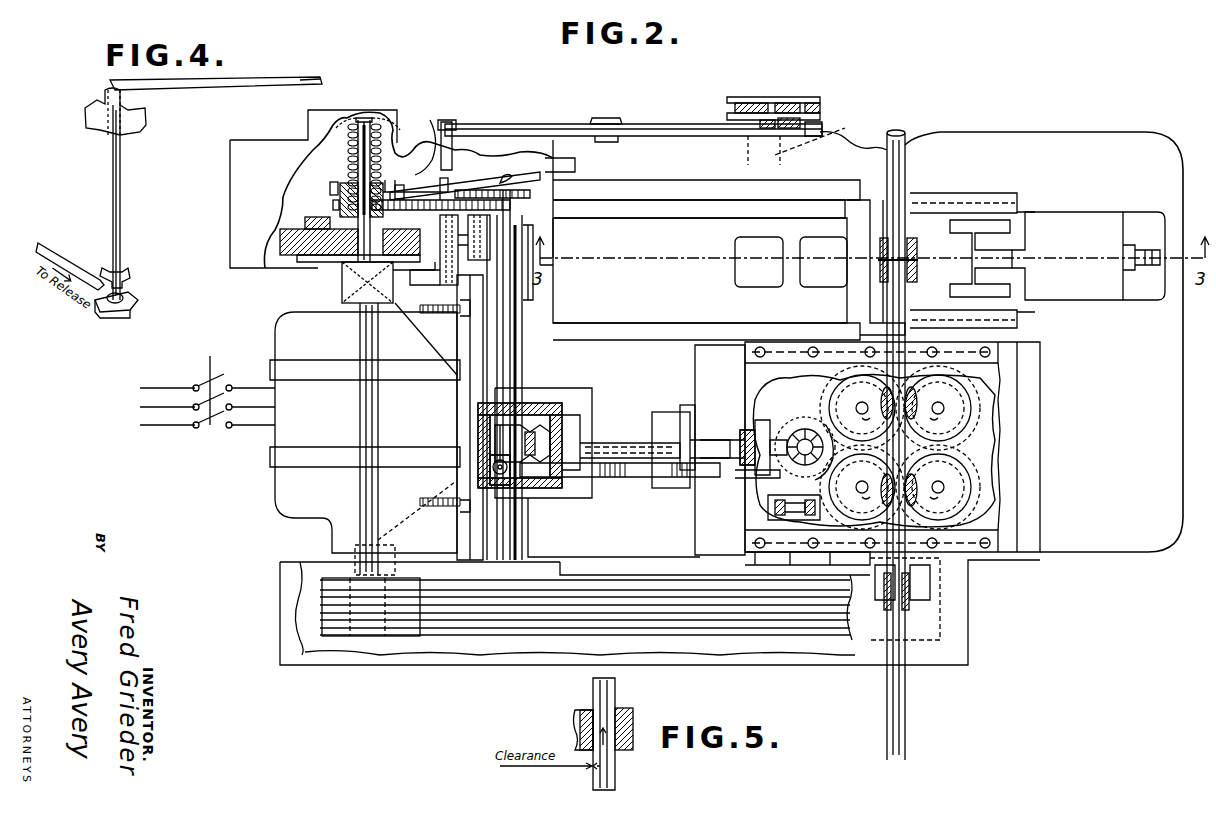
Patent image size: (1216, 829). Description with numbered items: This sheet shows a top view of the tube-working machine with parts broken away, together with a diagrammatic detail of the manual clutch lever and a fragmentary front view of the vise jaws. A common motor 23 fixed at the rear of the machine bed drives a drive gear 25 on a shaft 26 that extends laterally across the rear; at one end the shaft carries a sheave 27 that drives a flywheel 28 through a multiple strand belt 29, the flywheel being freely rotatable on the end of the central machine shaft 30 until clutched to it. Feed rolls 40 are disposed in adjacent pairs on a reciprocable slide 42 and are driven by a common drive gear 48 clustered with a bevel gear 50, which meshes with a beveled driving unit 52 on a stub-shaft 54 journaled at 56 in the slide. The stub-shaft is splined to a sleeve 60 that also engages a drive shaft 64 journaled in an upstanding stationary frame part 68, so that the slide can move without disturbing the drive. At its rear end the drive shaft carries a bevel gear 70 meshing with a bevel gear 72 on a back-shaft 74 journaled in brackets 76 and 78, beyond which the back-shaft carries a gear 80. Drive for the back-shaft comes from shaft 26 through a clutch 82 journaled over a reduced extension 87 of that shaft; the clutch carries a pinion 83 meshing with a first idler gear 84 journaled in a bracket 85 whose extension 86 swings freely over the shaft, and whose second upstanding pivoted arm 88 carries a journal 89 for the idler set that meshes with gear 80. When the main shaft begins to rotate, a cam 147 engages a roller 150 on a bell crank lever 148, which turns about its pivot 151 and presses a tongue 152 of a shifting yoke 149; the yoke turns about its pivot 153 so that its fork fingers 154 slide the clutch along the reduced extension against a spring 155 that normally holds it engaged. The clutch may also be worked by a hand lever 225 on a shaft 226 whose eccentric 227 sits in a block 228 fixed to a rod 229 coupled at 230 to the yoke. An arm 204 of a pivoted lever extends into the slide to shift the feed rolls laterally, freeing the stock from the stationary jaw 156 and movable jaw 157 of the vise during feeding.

In FIG. 2, the motor 23 is at (268, 502).
In FIG. 2, the drive gear 25 is at (290, 272).
In FIG. 2, the shaft 26 is at (360, 412).
In FIG. 2, the sheave 27 is at (372, 636).
In FIG. 2, the flywheel 28 is at (622, 640).
In FIG. 2, the multiple strand belt 29 is at (512, 636).
In FIG. 2, the central machine shaft 30 is at (979, 338).
In FIG. 2, the feed rolls 40 is at (955, 412).
In FIG. 2, the reciprocable slide 42 is at (1000, 520).
In FIG. 2, the common drive gear 48 is at (805, 480).
In FIG. 2, the bevel gear 50 is at (808, 422).
In FIG. 2, the beveled driving unit 52 is at (770, 430).
In FIG. 2, the stub-shaft 54 is at (745, 478).
In FIG. 2, the journal 56 is at (740, 428).
In FIG. 2, the sleeve 60 is at (700, 440).
In FIG. 2, the drive shaft 64 is at (628, 440).
In FIG. 2, the stationary frame part 68 is at (668, 395).
In FIG. 2, the bevel gear 70 is at (560, 400).
In FIG. 2, the bevel gear 72 is at (480, 430).
In FIG. 2, the back-shaft 74 is at (470, 378).
In FIG. 2, the bracket 76 is at (560, 378).
In FIG. 2, the bracket 78 is at (553, 225).
In FIG. 2, the gear 80 is at (553, 192).
In FIG. 2, the clutch 82 is at (325, 222).
In FIG. 2, the pinion 83 is at (330, 198).
In FIG. 2, the first idler gear 84 is at (410, 185).
In FIG. 2, the bracket 85 is at (470, 268).
In FIG. 2, the extension 86 is at (413, 283).
In FIG. 2, the reduced extension 87 is at (352, 155).
In FIG. 2, the second upstanding pivoted arm 88 is at (485, 252).
In FIG. 2, the journal 89 is at (553, 210).
In FIG. 2, the cam 147 is at (820, 122).
In FIG. 2, the bell crank lever 148 is at (553, 110).
In FIG. 2, the shifting yoke 149 is at (440, 112).
In FIG. 2, the roller 150 is at (778, 80).
In FIG. 2, the pivot 151 is at (612, 115).
In FIG. 2, the tongue 152 is at (452, 122).
In FIG. 2, the pivot 153 is at (462, 170).
In FIG. 2, the fork fingers 154 is at (380, 112).
In FIG. 2, the spring 155 is at (356, 114).
In FIG. 5, the stationary jaw 156 is at (585, 708).
In FIG. 5, the movable jaw 157 is at (633, 712).
In FIG. 2, the arm 204 is at (740, 540).
In FIG. 4, the hand lever 225 is at (212, 86).
In FIG. 2, the hand lever 225 is at (622, 478).
In FIG. 4, the shaft 226 is at (122, 195).
In FIG. 4, the eccentric 227 is at (108, 310).
In FIG. 4, the block 228 is at (128, 305).
In FIG. 2, the block 228 is at (495, 490).
In FIG. 4, the rod 229 is at (62, 252).
In FIG. 2, the rod 229 is at (515, 345).
In FIG. 2, the coupling 230 is at (553, 150).